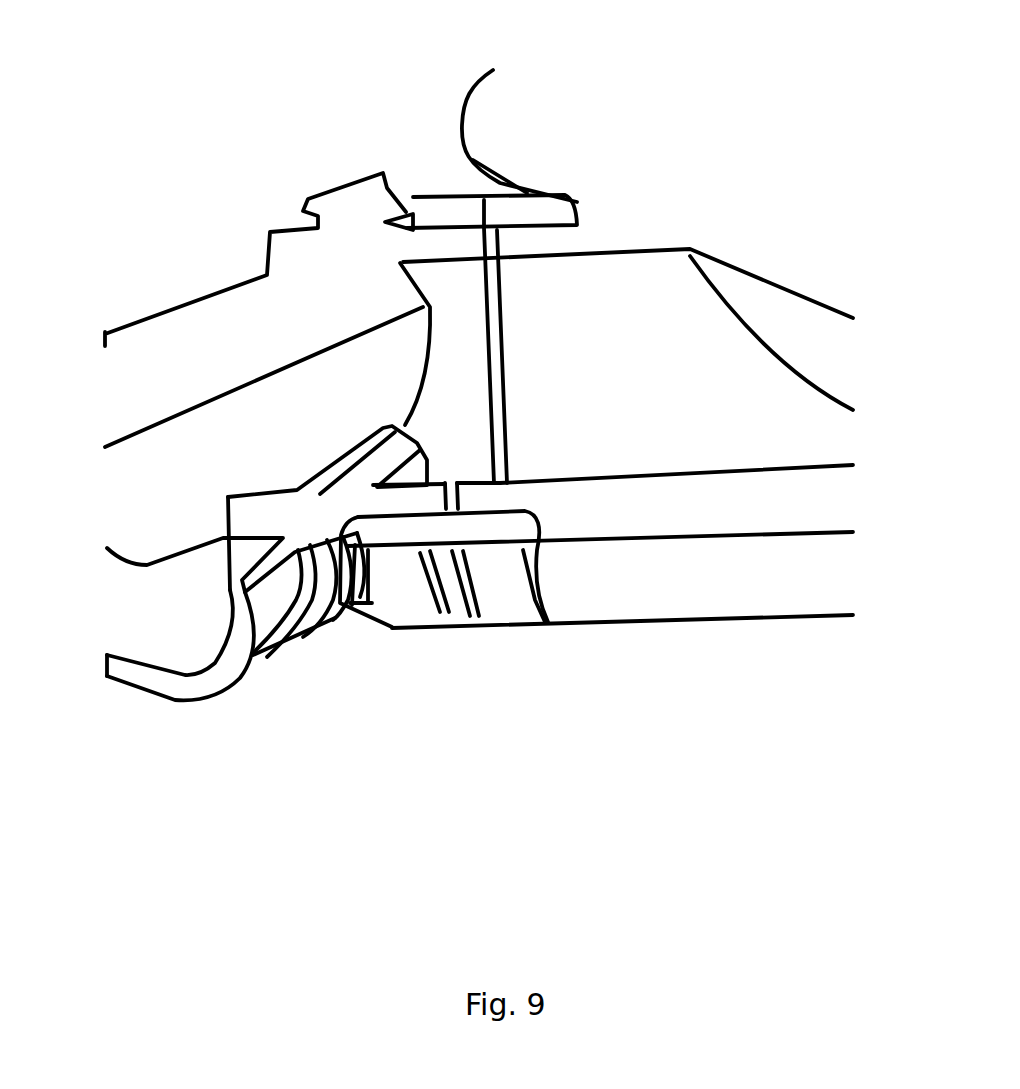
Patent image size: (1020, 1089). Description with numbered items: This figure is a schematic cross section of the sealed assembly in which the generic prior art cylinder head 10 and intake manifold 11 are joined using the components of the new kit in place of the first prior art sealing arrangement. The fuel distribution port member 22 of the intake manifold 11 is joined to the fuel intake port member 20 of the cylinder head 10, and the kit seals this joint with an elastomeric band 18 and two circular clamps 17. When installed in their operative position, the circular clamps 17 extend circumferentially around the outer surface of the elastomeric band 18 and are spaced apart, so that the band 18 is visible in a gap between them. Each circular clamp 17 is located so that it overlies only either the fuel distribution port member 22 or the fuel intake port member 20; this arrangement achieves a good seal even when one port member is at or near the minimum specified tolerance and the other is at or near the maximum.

The cylinder head 10 is at (648, 341).
The intake manifold 11 is at (95, 507).
The circular clamps 17 is at (436, 197).
The elastomeric band 18 is at (482, 208).
The fuel intake port member 20 is at (527, 247).
The fuel distribution port member 22 is at (440, 248).